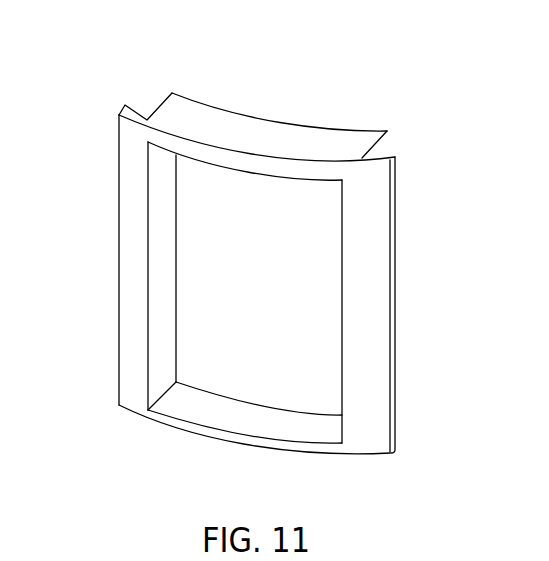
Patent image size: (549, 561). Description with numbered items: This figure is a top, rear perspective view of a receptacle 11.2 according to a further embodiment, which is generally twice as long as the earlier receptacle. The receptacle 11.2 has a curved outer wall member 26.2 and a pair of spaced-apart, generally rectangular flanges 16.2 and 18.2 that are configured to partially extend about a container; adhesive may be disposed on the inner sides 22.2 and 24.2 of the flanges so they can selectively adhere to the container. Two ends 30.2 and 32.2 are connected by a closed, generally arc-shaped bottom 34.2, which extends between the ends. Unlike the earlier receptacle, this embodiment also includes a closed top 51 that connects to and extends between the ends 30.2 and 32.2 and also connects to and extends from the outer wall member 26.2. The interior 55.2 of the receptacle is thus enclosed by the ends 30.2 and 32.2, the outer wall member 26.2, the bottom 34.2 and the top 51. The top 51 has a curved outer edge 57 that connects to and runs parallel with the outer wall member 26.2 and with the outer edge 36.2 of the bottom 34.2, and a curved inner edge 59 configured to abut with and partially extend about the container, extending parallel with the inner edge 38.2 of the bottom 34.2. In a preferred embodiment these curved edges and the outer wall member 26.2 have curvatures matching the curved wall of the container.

The receptacle 11.2 is at (390, 115).
The end 30.2 is at (157, 108).
The outer edge 57 is at (195, 103).
The top 51 is at (223, 127).
The end 32.2 is at (382, 145).
The inner edge 59 is at (323, 170).
The outer wall member 26.2 is at (272, 230).
The interior 55.2 is at (192, 262).
The flange 16.2 is at (128, 312).
The inner side 22.2 is at (130, 377).
The bottom 34.2 is at (192, 408).
The outer edge 36.2 is at (225, 397).
The inner edge 38.2 is at (302, 450).
The flange 18.2 is at (380, 333).
The inner side 24.2 is at (370, 389).